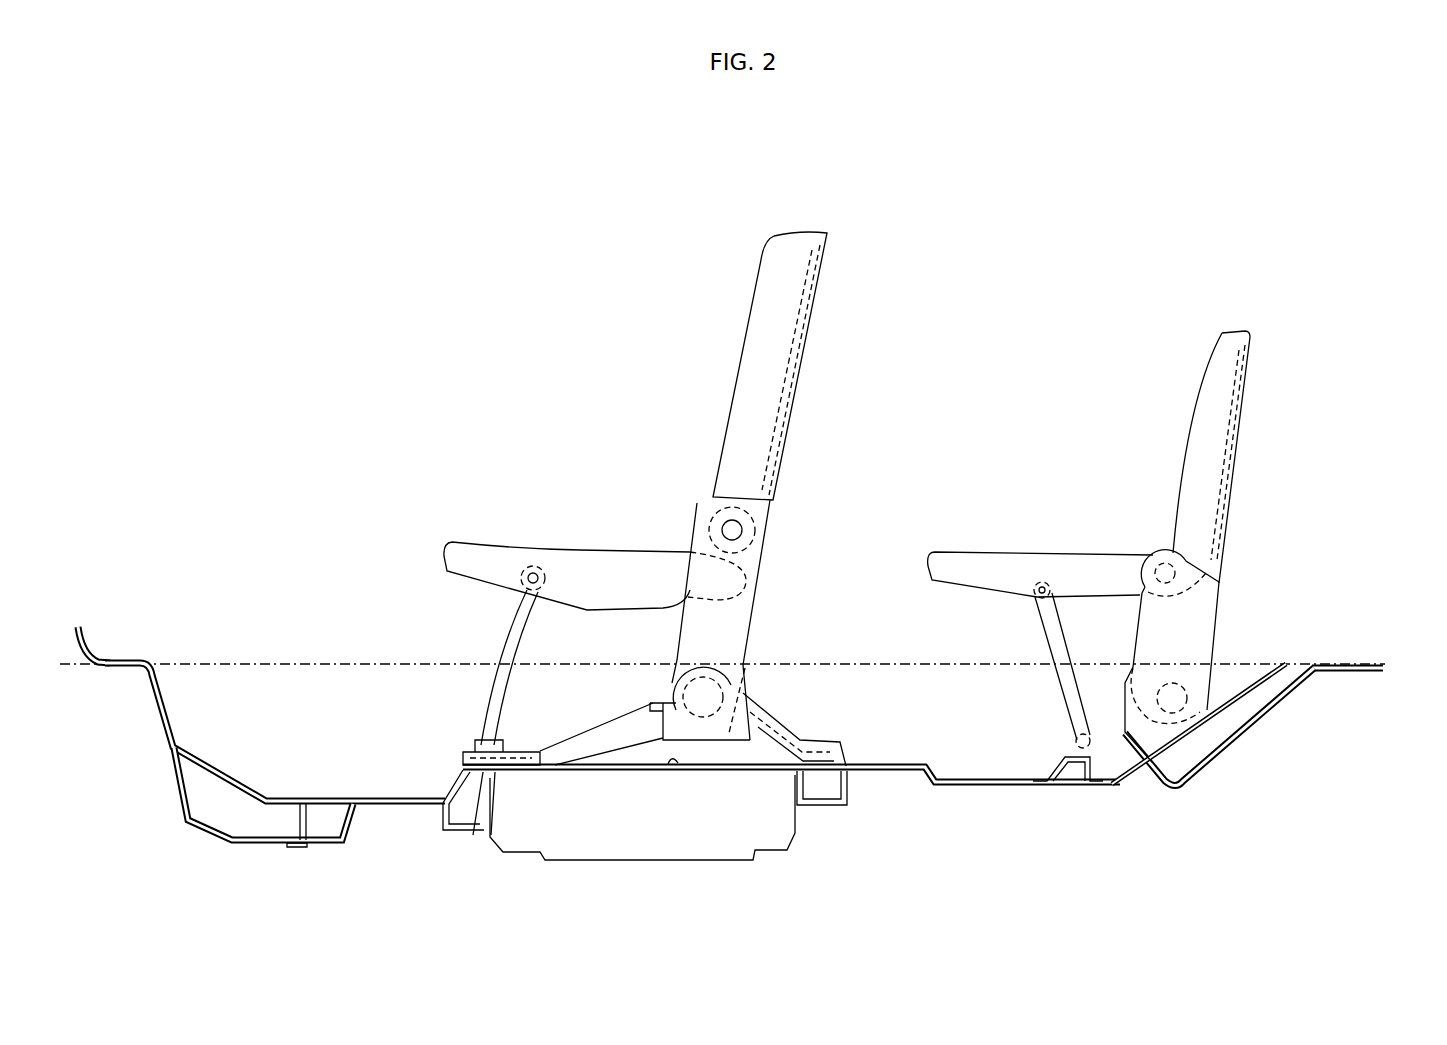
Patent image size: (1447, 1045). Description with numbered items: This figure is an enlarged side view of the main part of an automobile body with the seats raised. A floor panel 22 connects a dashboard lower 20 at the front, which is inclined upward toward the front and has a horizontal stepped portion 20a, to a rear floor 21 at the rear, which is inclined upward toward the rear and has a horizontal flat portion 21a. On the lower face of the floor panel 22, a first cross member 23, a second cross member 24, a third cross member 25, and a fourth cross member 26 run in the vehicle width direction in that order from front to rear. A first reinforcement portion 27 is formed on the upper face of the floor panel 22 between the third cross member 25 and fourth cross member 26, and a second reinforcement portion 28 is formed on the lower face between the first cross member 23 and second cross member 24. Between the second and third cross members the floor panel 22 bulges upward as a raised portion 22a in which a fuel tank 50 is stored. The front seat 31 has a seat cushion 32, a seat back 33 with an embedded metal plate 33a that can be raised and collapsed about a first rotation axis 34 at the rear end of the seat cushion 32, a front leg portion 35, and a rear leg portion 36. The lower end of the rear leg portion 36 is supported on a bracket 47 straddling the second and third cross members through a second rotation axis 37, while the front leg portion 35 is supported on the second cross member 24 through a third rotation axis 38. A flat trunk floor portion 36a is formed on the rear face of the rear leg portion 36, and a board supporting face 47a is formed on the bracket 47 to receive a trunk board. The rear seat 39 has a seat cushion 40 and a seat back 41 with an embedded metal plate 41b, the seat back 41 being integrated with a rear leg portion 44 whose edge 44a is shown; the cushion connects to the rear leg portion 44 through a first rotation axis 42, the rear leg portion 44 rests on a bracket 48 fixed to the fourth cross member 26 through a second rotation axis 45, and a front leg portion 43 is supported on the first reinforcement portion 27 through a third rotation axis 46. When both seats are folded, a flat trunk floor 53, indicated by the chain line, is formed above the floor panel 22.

The dashboard lower 20 is at (261, 745).
The horizontal stepped portion 20a is at (178, 656).
The rear floor 21 is at (1279, 679).
The horizontal flat portion 21a is at (1366, 666).
The floor panel 22 is at (791, 747).
The raised portion 22a is at (683, 763).
The first cross member 23 is at (222, 841).
The second cross member 24 is at (473, 834).
The third cross member 25 is at (820, 806).
The fourth cross member 26 is at (1226, 756).
The first reinforcement portion 27 is at (1047, 770).
The second reinforcement portion 28 is at (346, 841).
The front seat 31 is at (675, 497).
The seat cushion 32 is at (600, 540).
The seat back 33 is at (794, 364).
The metal plate 33a is at (805, 350).
The first rotation axis 34 is at (782, 495).
The front leg portion 35 is at (502, 645).
The rear leg portion 36 is at (761, 592).
The flat trunk floor portion 36a is at (748, 640).
The second rotation axis 37 is at (750, 694).
The third rotation axis 38 is at (480, 745).
The rear seat 39 is at (1130, 537).
The seat cushion 40 is at (1063, 575).
The seat back 41 is at (1223, 447).
The metal plate 41b is at (1243, 450).
The first rotation axis 42 is at (1157, 552).
The front leg portion 43 is at (1036, 665).
The rear leg portion 44 is at (1218, 618).
The bracket rear edge 44a is at (1218, 608).
The second rotation axis 45 is at (1175, 685).
The third rotation axis 46 is at (1080, 740).
The bracket 47 is at (584, 716).
The board supporting face 47a is at (818, 747).
The bracket 48 is at (1246, 683).
The fuel tank 50 is at (654, 861).
The trunk floor 53 is at (905, 660).